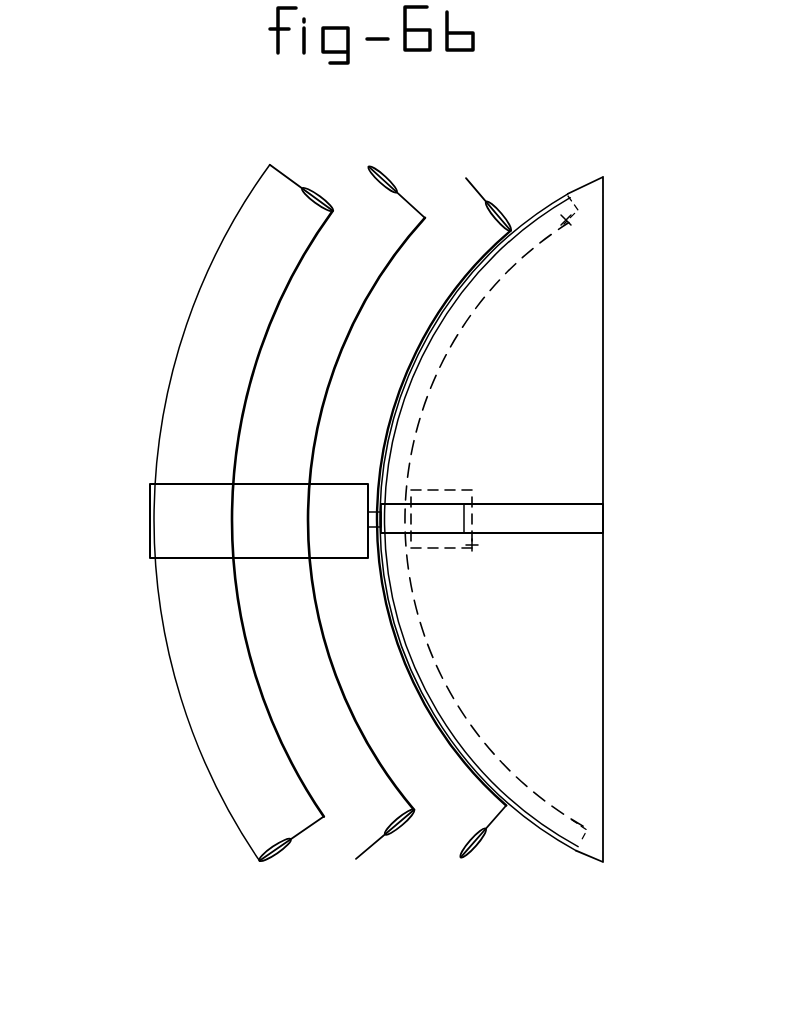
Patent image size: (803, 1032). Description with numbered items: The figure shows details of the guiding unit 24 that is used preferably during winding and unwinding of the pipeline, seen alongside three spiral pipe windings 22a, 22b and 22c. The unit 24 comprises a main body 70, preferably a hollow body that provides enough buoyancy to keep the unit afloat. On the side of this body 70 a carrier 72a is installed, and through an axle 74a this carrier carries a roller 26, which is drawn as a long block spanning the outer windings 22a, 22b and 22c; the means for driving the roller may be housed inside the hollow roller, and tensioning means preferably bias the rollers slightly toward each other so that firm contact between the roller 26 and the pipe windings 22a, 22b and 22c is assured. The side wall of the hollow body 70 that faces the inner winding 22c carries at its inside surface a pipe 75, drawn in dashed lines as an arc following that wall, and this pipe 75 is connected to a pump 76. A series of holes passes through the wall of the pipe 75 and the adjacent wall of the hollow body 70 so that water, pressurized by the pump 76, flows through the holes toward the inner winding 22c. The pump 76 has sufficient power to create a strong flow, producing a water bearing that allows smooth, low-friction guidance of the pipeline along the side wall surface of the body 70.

The guiding unit 24 is at (528, 467).
The pipe winding 22a is at (200, 657).
The pipe winding 22b is at (280, 688).
The inner pipe winding 22c is at (378, 715).
The roller 26 is at (168, 507).
The main body 70 is at (585, 340).
The carrier 72a is at (573, 512).
The axle 74a is at (387, 490).
The pipe 75 is at (567, 222).
The pump 76 is at (472, 545).